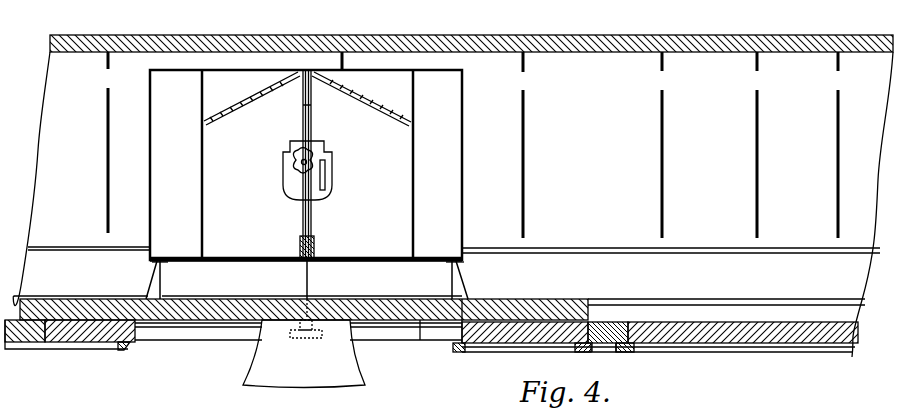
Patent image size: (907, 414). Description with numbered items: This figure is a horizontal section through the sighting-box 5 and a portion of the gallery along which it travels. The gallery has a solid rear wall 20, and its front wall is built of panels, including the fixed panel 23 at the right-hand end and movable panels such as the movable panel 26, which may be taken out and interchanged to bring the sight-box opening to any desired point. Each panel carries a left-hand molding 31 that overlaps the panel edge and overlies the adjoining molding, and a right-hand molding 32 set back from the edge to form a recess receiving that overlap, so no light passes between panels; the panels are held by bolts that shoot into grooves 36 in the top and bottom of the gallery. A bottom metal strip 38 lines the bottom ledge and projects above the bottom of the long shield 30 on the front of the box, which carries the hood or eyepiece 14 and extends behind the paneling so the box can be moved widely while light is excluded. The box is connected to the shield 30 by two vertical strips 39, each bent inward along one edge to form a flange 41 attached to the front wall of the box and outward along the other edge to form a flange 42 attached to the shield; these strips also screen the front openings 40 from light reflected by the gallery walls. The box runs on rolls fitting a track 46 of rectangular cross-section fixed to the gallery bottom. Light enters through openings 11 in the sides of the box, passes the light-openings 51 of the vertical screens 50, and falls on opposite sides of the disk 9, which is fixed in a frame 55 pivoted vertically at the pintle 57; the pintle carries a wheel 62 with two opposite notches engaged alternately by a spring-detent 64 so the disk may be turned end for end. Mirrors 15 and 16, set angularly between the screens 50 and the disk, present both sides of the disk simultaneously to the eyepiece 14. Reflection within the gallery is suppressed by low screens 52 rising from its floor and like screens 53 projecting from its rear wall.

The sighting-box 5 is at (465, 88).
The disk 9 is at (312, 218).
The openings 11 is at (147, 176).
The hood or eyepiece 14 is at (304, 354).
The mirror 15 is at (234, 108).
The mirror 16 is at (386, 116).
The rear wall 20 is at (598, 29).
The fixed panel 23 is at (740, 336).
The movable panel 26 is at (37, 342).
The shield 30 is at (428, 322).
The left-hand molding 31 is at (460, 352).
The right-hand molding 32 is at (121, 349).
The grooves 36 is at (165, 328).
The bottom metal strip 38 is at (666, 300).
The vertical strips 39 is at (156, 268).
The openings 40 is at (338, 259).
The flange 41 is at (166, 266).
The flange 42 is at (468, 292).
The track 46 is at (88, 247).
The vertical screens 50 is at (204, 238).
The light-openings 51 is at (204, 172).
The low screens 52 is at (526, 160).
The screens 53 is at (531, 68).
The frame 55 is at (314, 247).
The pintle 57 is at (283, 175).
The wheel 62 is at (316, 160).
The spring-detent 64 is at (326, 178).